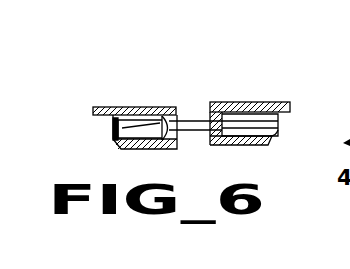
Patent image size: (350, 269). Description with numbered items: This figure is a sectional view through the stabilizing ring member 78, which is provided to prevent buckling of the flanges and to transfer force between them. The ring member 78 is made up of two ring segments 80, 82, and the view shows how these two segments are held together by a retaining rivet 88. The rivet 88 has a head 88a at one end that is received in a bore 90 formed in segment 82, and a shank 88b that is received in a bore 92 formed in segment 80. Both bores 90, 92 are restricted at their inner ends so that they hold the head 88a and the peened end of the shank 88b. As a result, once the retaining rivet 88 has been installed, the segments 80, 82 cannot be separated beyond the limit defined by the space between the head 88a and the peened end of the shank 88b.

The stabilizing ring member 78 is at (207, 101).
The ring segment 80 is at (226, 110).
The ring segment 82 is at (128, 107).
The retaining rivet 88 is at (193, 134).
The head 88a is at (113, 132).
The shank 88b is at (279, 122).
The bore 90 is at (118, 122).
The bore 92 is at (273, 139).